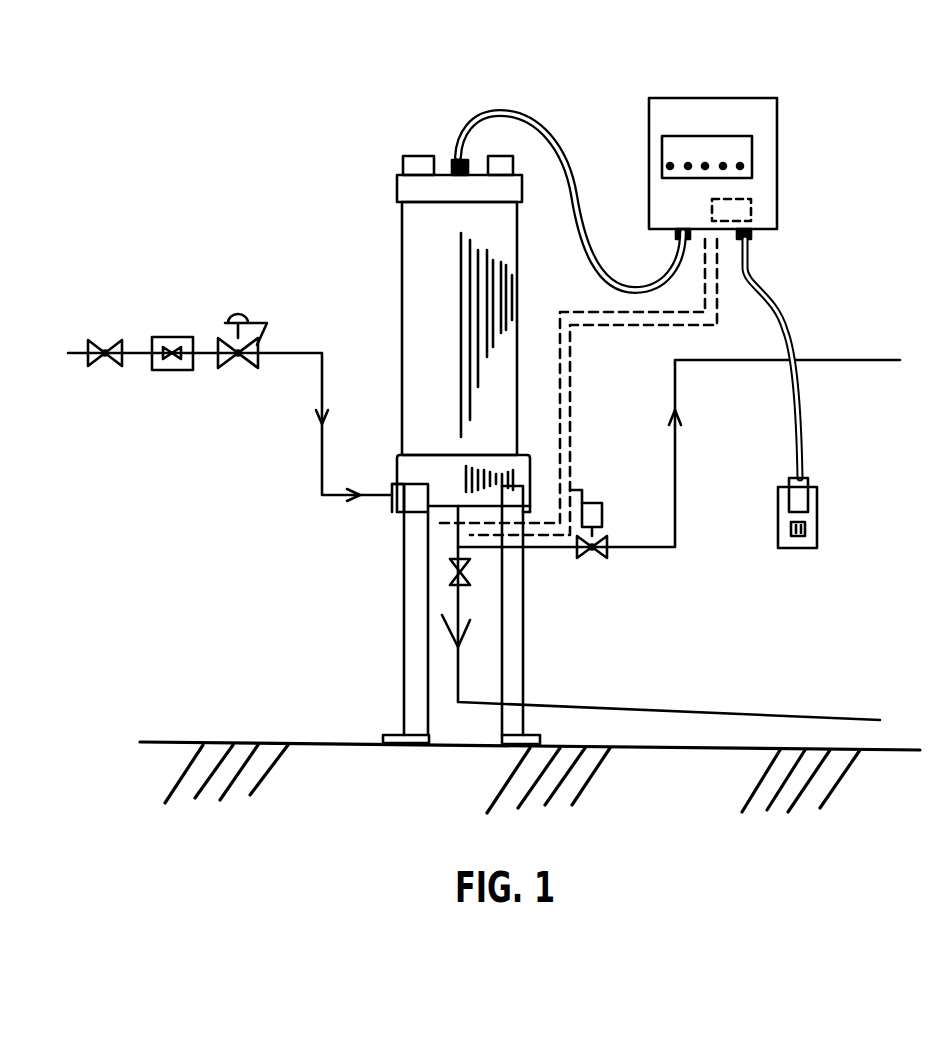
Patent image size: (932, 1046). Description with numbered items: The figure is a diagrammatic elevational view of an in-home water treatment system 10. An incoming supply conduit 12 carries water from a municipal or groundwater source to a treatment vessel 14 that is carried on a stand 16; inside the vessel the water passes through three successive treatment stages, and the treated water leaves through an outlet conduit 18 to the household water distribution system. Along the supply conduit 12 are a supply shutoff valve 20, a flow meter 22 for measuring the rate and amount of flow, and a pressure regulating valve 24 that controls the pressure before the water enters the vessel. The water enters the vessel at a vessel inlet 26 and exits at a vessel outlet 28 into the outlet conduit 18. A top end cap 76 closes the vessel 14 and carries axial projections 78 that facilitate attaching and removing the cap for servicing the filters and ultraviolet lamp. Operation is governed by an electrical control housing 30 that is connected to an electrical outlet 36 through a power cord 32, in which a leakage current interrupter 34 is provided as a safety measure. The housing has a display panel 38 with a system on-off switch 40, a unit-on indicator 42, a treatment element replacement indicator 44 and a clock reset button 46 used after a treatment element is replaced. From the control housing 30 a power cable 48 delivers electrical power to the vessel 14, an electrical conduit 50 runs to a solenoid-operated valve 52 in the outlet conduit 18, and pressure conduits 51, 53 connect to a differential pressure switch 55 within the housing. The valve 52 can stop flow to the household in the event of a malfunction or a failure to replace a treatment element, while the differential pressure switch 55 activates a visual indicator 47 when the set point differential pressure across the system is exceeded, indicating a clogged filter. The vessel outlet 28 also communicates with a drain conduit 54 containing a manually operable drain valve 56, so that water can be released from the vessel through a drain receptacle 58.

The water treatment system 10 is at (200, 172).
The supply conduit 12 is at (292, 360).
The treatment vessel 14 is at (411, 300).
The stand 16 is at (415, 608).
The outlet conduit 18 is at (648, 555).
The supply shutoff valve 20 is at (112, 368).
The flow meter 22 is at (172, 372).
The pressure regulating valve 24 is at (243, 370).
The vessel inlet 26 is at (397, 492).
The vessel outlet 28 is at (458, 519).
The electrical control housing 30 is at (770, 126).
The power cord 32 is at (803, 420).
The leakage current interrupter 34 is at (810, 488).
The electrical outlet 36 is at (818, 520).
The display panel 38 is at (742, 152).
The system on-off switch 40 is at (738, 167).
The unit-on indicator 42 is at (723, 162).
The treatment element replacement indicator 44 is at (705, 162).
The clock reset button 46 is at (680, 163).
The visual indicator 47 is at (668, 166).
The power cable 48 is at (512, 115).
The electrical conduit 50 is at (576, 400).
The pressure conduit 51 is at (593, 307).
The solenoid-operated valve 52 is at (590, 560).
The pressure conduit 53 is at (567, 330).
The drain conduit 54 is at (458, 666).
The differential pressure switch 55 is at (762, 218).
The drain valve 56 is at (450, 566).
The drain receptacle 58 is at (466, 638).
The end cap 76 is at (402, 188).
The axial projections 78 is at (420, 155).